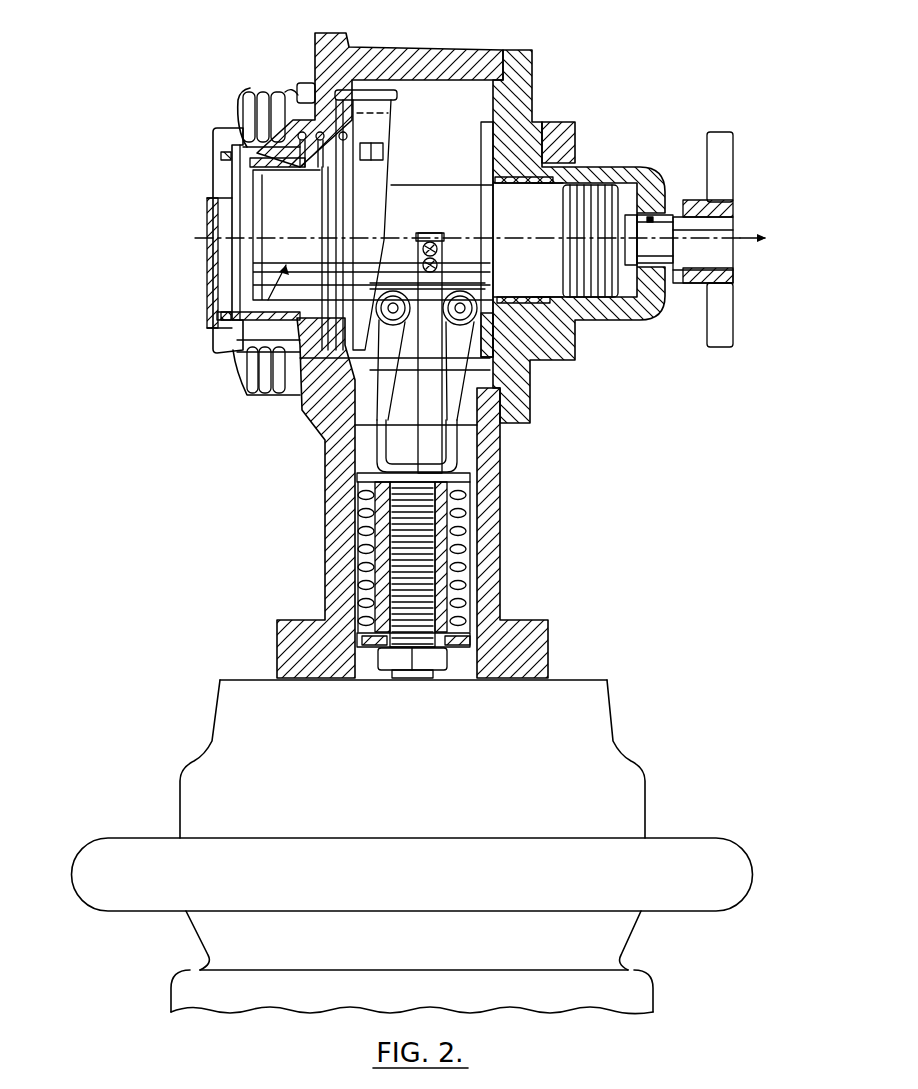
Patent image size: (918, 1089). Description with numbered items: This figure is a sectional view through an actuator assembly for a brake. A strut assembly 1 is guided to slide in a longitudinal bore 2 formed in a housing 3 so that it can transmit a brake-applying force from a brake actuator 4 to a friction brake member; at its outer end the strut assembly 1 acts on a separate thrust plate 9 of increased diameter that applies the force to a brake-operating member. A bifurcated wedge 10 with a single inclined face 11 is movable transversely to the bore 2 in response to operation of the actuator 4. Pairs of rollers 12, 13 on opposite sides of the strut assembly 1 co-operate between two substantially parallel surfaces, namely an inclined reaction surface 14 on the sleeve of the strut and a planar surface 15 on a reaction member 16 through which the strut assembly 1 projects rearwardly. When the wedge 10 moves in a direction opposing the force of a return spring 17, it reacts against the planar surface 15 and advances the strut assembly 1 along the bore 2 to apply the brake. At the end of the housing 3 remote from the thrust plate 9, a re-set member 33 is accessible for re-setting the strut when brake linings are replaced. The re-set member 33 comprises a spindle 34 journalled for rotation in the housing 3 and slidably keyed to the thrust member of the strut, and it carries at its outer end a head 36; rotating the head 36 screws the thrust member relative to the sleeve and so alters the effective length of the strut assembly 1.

The strut assembly 1 is at (240, 340).
The longitudinal bore 2 is at (298, 83).
The housing 3 is at (468, 62).
The brake actuator 4 is at (592, 767).
The thrust plate 9 is at (212, 240).
The bifurcated wedge 10 is at (423, 413).
The inclined face 11 is at (347, 402).
The rollers 12 is at (372, 396).
The rollers 13 is at (540, 357).
The inclined reaction surface 14 is at (385, 226).
The planar surface 15 is at (483, 165).
The reaction member 16 is at (485, 157).
The return spring 17 is at (463, 520).
The re-set member 33 is at (713, 173).
The spindle 34 is at (641, 228).
The head 36 is at (718, 320).